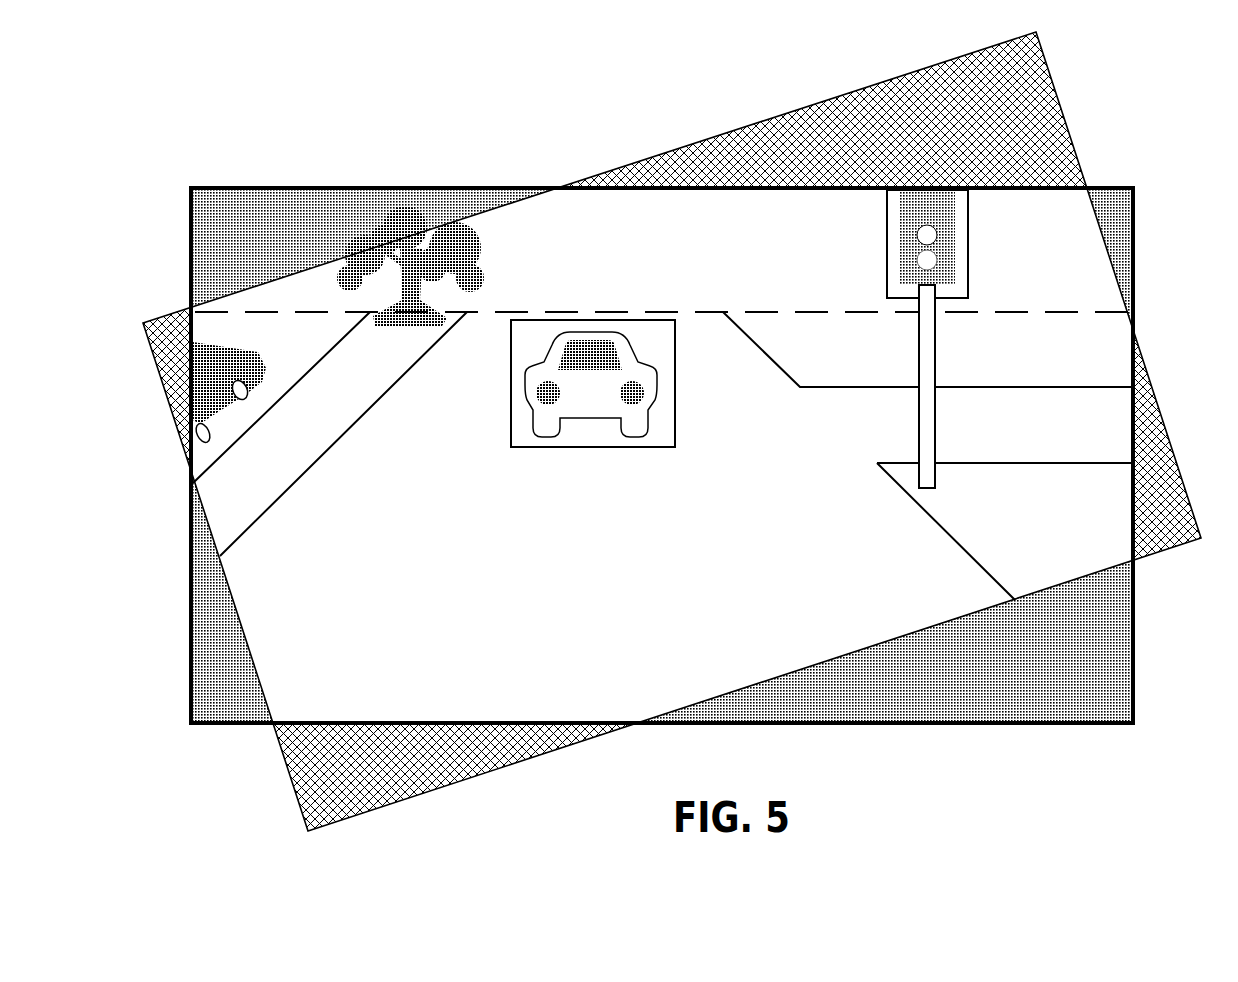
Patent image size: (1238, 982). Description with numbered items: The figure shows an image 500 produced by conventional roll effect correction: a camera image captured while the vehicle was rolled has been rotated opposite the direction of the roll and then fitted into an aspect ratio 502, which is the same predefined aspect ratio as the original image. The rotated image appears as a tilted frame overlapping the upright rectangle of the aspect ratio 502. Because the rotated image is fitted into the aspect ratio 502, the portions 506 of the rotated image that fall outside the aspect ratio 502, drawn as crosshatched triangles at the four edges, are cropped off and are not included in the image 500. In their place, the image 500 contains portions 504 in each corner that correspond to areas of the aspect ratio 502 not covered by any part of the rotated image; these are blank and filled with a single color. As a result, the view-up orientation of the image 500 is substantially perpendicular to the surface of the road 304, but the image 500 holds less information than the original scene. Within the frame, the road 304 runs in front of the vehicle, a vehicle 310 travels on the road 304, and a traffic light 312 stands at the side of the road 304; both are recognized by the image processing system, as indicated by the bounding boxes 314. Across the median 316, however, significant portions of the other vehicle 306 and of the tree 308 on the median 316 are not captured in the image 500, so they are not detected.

The image 500 is at (592, 106).
The aspect ratio 502 is at (387, 188).
The blank portions 504 is at (255, 215).
The cropped portions 506 is at (860, 148).
The road 304 is at (602, 666).
The vehicle 306 is at (226, 413).
The tree 308 is at (487, 265).
The vehicle 310 is at (633, 435).
The traffic light 312 is at (903, 257).
The recognition bounding boxes 314 is at (511, 425).
The median 316 is at (355, 428).